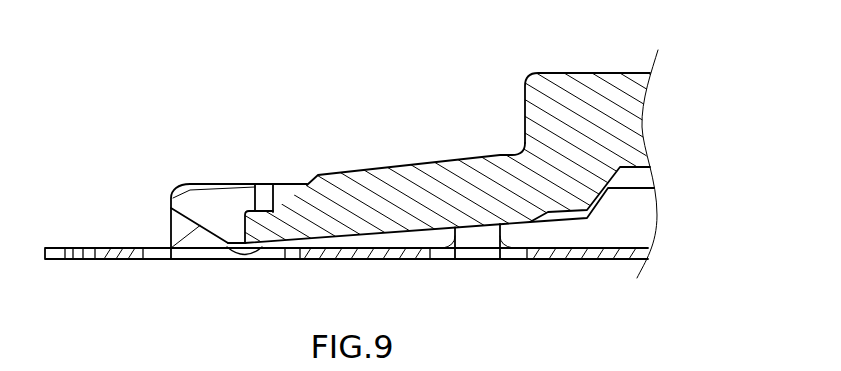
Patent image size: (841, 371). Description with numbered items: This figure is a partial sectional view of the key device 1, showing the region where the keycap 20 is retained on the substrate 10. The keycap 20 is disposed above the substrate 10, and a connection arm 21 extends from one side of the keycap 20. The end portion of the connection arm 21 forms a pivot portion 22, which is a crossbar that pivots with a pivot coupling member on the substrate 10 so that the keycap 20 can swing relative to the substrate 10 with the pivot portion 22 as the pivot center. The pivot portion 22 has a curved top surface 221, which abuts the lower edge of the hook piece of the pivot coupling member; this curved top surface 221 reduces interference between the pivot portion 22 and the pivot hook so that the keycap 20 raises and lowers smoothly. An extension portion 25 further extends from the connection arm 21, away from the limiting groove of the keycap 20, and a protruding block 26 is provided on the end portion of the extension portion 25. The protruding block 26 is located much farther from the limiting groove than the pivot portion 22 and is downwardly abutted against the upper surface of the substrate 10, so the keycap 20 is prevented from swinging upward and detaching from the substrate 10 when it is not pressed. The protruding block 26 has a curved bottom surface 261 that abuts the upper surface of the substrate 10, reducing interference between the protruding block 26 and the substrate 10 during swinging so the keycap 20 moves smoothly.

The key device 1 is at (158, 158).
The substrate 10 is at (58, 246).
The keycap 20 is at (617, 85).
The connection arm 21 is at (458, 177).
The pivot portion 22 is at (267, 243).
The curved top surface 221 is at (265, 203).
The extension portion 25 is at (231, 204).
The protruding block 26 is at (230, 276).
The curved bottom surface 261 is at (255, 255).